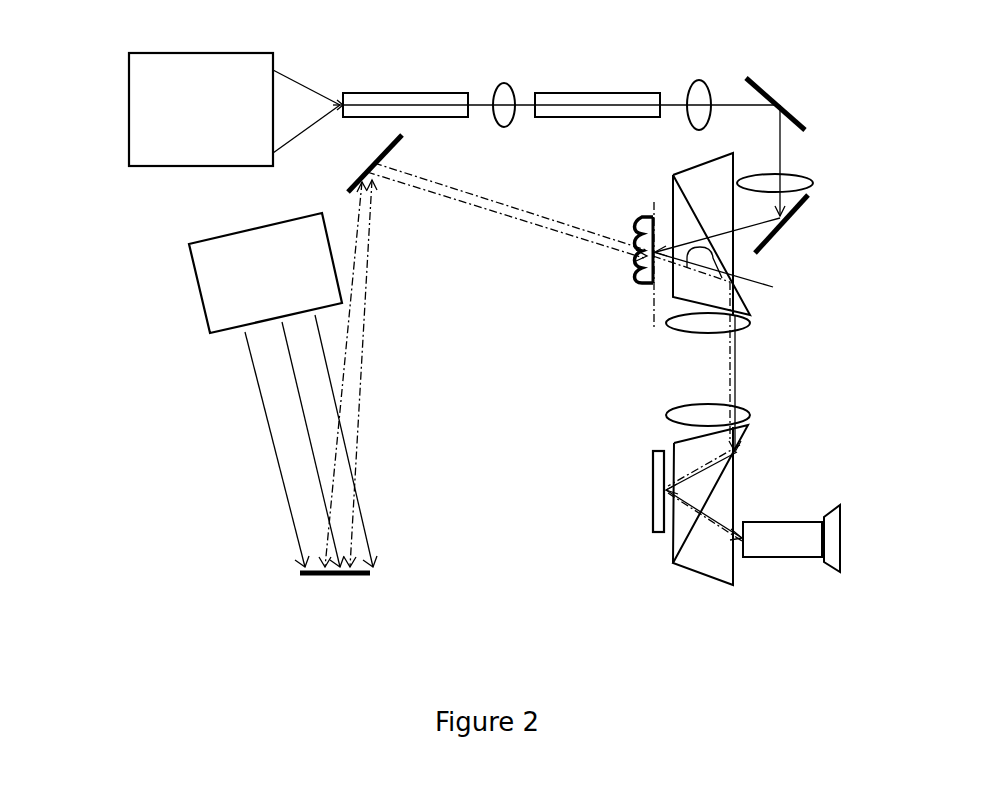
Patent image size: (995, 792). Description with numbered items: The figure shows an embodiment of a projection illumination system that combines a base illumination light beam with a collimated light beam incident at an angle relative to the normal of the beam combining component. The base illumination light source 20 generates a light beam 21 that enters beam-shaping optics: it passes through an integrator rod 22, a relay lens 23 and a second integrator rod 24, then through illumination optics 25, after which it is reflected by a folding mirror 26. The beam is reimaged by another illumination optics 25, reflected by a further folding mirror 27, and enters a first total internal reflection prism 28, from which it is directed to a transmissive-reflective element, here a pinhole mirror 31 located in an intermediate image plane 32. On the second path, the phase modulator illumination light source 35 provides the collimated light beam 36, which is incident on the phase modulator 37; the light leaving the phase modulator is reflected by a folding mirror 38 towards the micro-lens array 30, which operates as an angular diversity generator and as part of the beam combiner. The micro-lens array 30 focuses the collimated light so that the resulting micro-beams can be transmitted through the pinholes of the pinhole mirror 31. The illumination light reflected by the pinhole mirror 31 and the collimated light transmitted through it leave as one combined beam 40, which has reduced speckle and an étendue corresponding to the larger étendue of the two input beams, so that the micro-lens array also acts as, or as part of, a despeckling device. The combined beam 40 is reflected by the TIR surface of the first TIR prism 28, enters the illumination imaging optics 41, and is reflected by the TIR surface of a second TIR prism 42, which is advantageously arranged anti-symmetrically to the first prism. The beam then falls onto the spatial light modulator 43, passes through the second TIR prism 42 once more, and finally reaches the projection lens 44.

The base illumination light source 20 is at (129, 103).
The light beam 21 is at (280, 68).
The integrator rod 22 is at (405, 89).
The relay lens 23 is at (500, 79).
The second integrator rod 24 is at (597, 85).
The illumination optics 25 is at (768, 176).
The folding mirror 26 is at (770, 93).
The folding mirror 27 is at (800, 212).
The first total internal reflection prism 28 is at (688, 156).
The micro-lens array 30 is at (629, 226).
The pinhole mirror 31 is at (658, 226).
The intermediate image plane 32 is at (653, 298).
The phase modulator illumination light source 35 is at (200, 297).
The collimated light beam 36 is at (315, 322).
The phase modulator 37 is at (343, 577).
The folding mirror 38 is at (370, 167).
The combined beam 40 is at (727, 284).
The illumination imaging optics 41 is at (680, 332).
The second TIR prism 42 is at (680, 565).
The spatial light modulator 43 is at (650, 495).
The projection lens 44 is at (805, 557).